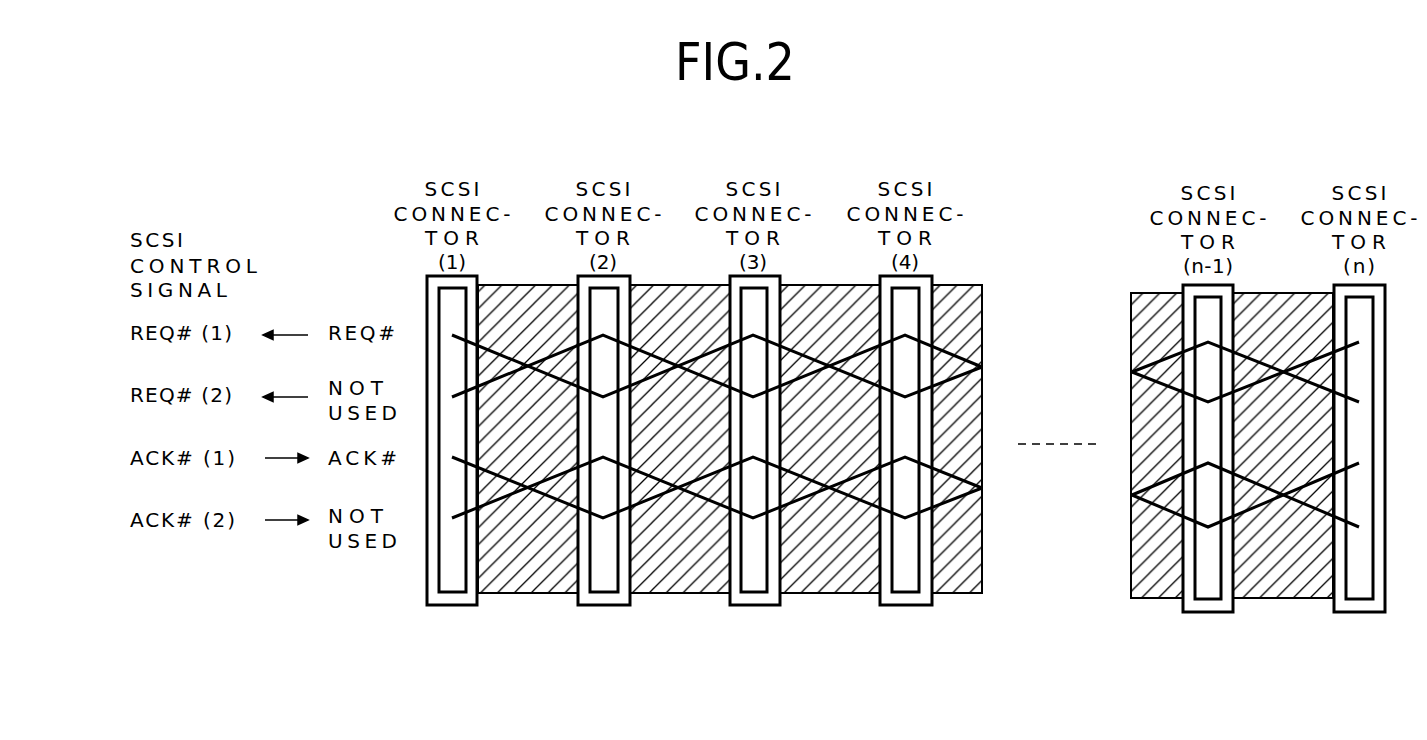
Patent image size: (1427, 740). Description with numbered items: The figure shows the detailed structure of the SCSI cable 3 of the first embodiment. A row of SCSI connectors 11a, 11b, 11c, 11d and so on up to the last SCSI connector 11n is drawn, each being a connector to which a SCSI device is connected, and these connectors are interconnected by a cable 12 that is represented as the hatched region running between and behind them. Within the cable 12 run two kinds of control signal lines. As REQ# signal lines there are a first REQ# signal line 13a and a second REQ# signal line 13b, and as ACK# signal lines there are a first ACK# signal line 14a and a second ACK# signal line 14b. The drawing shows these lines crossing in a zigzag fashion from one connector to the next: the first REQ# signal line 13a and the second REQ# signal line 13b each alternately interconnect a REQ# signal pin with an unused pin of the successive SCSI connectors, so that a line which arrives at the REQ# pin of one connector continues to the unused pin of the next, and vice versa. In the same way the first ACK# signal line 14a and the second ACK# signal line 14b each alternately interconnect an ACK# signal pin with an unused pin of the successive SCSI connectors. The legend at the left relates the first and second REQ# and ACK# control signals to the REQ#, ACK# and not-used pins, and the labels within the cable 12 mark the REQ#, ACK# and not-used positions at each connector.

The SCSI cable 3 is at (898, 168).
The SCSI connector 11a is at (452, 606).
The SCSI connector 11b is at (604, 606).
The SCSI connector 11c is at (753, 606).
The SCSI connector 11d is at (905, 606).
The SCSI connector 11n is at (1356, 613).
The cable 12 is at (832, 594).
The REQ#(1) signal line 13a is at (957, 384).
The REQ#(2) signal line 13b is at (962, 353).
The ACK#(1) signal line 14a is at (957, 506).
The ACK#(2) signal line 14b is at (962, 481).